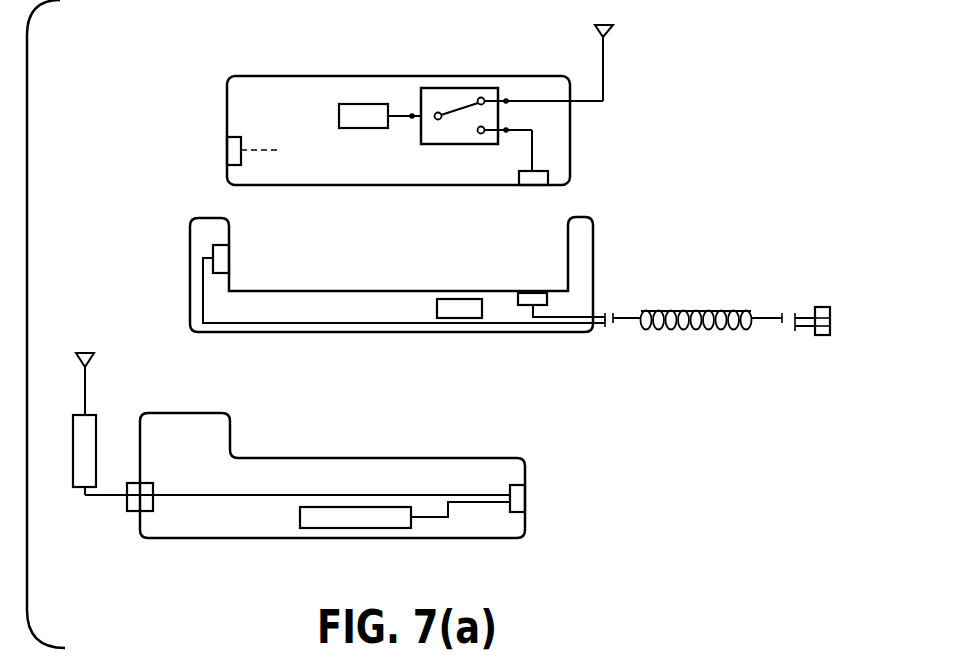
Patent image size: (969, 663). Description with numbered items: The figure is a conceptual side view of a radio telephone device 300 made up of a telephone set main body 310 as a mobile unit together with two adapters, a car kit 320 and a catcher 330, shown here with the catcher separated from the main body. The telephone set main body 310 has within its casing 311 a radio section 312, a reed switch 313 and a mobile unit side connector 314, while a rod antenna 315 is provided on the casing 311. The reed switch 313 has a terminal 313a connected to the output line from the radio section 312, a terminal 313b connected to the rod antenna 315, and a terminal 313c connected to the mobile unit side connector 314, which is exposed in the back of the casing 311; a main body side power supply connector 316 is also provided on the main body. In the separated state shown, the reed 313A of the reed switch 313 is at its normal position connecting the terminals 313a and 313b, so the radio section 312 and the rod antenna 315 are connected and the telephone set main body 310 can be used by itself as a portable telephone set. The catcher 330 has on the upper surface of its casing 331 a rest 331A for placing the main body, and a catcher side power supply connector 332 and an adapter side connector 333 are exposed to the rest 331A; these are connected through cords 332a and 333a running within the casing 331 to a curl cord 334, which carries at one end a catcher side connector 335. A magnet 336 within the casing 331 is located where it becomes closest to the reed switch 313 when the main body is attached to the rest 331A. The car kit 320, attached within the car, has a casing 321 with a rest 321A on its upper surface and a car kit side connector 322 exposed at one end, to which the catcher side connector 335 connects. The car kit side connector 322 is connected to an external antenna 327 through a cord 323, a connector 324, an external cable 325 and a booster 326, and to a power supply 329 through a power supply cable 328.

The radio telephone device 300 is at (132, 189).
The telephone set main body 310 is at (223, 73).
The casing 311 is at (272, 76).
The radio section 312 is at (357, 104).
The reed switch 313 is at (461, 74).
The reed 313A is at (503, 94).
The terminal 313a is at (412, 113).
The terminal 313b is at (508, 99).
The terminal 313c is at (509, 130).
The mobile unit side connector 314 is at (549, 178).
The rod antenna 315 is at (605, 60).
The main body side power supply connector 316 is at (229, 148).
The car kit 320 is at (530, 455).
The casing 321 is at (190, 540).
The rest 321A is at (378, 457).
The car kit side connector 322 is at (527, 492).
The cord 323 is at (258, 498).
The connector 324 is at (131, 517).
The external cable 325 is at (93, 497).
The booster 326 is at (73, 452).
The external antenna 327 is at (87, 382).
The power supply cable 328 is at (475, 503).
The power supply 329 is at (375, 529).
The catcher 330 is at (185, 285).
The casing 331 is at (412, 333).
The rest 331A is at (360, 291).
The catcher side power supply connector 332 is at (222, 255).
The cord 332a is at (272, 324).
The adapter side connector 333 is at (525, 293).
The cord 333a is at (572, 316).
The curl cord 334 is at (709, 303).
The catcher side connector 335 is at (822, 307).
The magnet 336 is at (456, 304).